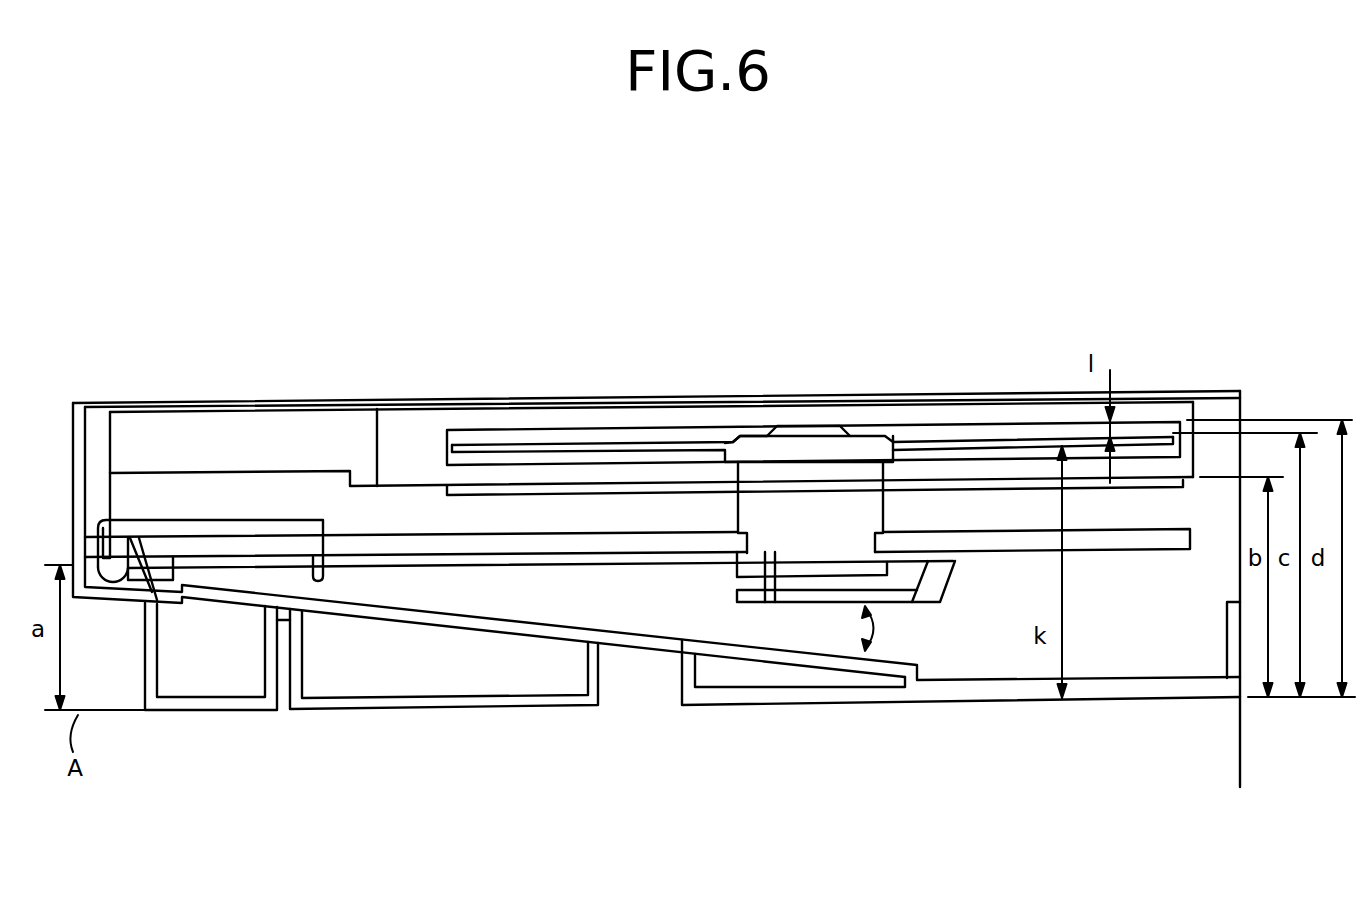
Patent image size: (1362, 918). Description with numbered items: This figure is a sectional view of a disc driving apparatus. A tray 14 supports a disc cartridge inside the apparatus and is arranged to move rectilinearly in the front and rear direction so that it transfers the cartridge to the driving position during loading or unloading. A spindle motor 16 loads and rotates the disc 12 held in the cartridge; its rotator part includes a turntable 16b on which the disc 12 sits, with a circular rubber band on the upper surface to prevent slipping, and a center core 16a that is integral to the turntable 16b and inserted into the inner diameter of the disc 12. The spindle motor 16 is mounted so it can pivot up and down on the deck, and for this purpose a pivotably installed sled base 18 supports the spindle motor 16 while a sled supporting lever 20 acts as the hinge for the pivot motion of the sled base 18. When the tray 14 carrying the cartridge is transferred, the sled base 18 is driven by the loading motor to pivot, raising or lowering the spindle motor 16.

The disc 12 is at (620, 447).
The tray 14 is at (174, 418).
The spindle motor 16 is at (873, 466).
The center core 16a is at (817, 428).
The turntable 16b is at (739, 452).
The sled base 18 is at (487, 558).
The sled supporting lever 20 is at (105, 581).